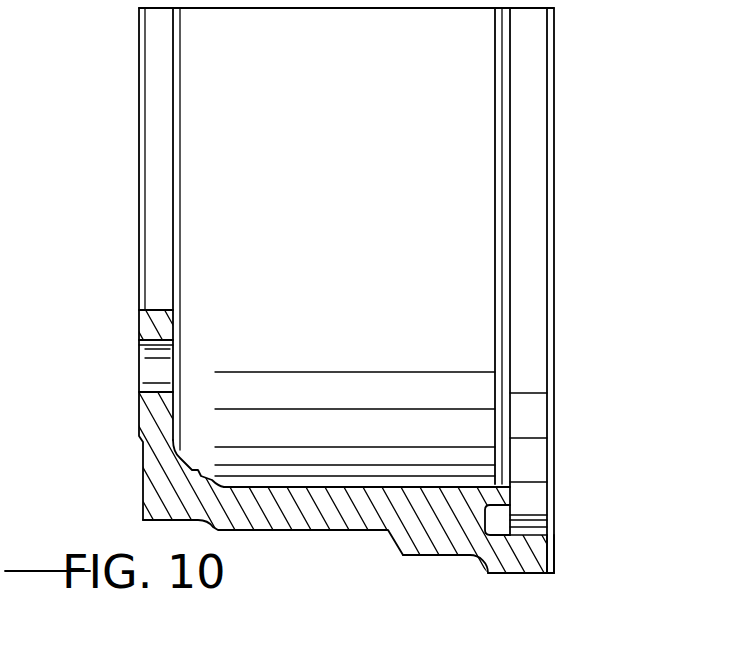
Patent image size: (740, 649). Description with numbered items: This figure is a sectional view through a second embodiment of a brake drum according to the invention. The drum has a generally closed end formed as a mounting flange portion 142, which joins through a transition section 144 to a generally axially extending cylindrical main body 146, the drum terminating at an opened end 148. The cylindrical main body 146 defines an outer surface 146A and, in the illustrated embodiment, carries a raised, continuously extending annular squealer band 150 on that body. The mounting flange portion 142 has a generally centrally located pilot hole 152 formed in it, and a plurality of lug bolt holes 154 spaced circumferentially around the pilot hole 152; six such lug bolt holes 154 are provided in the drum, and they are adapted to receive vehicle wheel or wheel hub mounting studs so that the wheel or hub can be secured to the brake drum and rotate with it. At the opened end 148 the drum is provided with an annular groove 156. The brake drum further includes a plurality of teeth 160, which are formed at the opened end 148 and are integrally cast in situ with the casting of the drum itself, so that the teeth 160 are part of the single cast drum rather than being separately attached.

The mounting flange portion 142 is at (139, 318).
The transition section 144 is at (190, 468).
The cylindrical main body 146 is at (296, 500).
The outer surface 146A is at (296, 532).
The opened end 148 is at (555, 289).
The squealer band 150 is at (418, 555).
The pilot hole 152 is at (158, 310).
The lug bolt holes 154 is at (158, 343).
The annular groove 156 is at (490, 512).
The teeth 160 is at (566, 554).